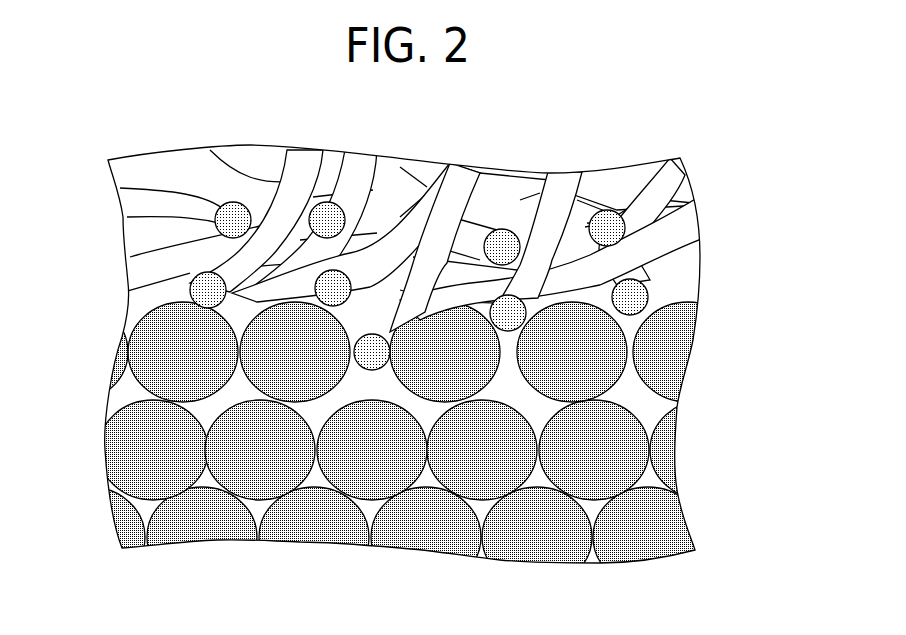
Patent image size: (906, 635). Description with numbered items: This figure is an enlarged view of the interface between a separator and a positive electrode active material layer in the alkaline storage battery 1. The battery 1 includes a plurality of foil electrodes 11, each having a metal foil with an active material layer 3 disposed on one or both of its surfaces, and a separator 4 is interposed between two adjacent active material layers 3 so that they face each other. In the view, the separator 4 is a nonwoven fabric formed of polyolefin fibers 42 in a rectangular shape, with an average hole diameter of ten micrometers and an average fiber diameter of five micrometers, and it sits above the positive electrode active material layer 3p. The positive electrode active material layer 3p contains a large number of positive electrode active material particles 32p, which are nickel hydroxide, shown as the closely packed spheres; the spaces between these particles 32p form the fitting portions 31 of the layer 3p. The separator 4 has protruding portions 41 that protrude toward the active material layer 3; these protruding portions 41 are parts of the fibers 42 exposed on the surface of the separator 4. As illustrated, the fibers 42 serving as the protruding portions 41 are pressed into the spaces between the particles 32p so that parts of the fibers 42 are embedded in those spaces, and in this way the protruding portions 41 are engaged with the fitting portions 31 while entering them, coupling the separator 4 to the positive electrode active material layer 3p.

The alkaline storage battery 1 is at (570, 148).
The active material layer 3 is at (399, 457).
The positive electrode active material layer 3p is at (538, 482).
The separator 4 is at (620, 185).
The foil electrode 11 is at (645, 412).
The fitting portion 31 is at (220, 293).
The positive electrode active material particle 32p is at (662, 345).
The protruding portion 41 is at (383, 312).
The fiber 42 is at (290, 163).